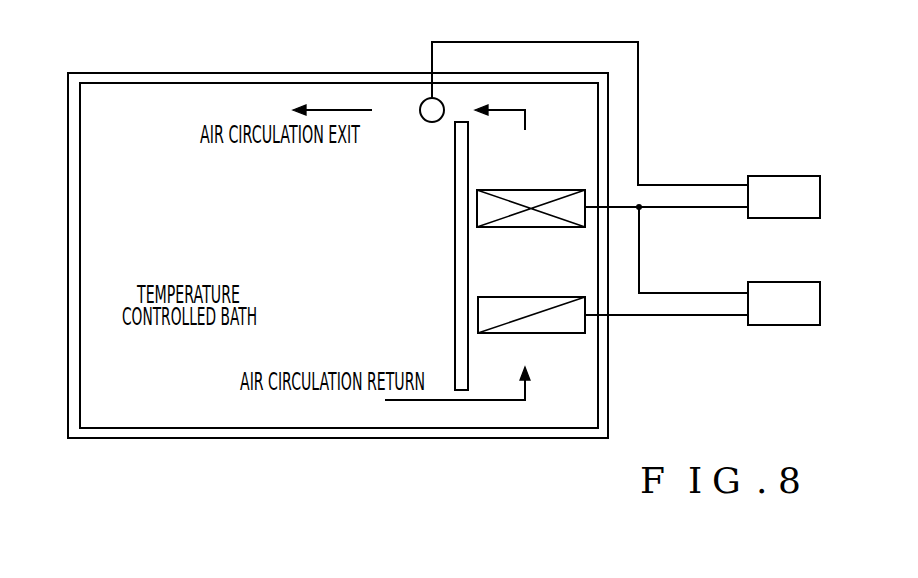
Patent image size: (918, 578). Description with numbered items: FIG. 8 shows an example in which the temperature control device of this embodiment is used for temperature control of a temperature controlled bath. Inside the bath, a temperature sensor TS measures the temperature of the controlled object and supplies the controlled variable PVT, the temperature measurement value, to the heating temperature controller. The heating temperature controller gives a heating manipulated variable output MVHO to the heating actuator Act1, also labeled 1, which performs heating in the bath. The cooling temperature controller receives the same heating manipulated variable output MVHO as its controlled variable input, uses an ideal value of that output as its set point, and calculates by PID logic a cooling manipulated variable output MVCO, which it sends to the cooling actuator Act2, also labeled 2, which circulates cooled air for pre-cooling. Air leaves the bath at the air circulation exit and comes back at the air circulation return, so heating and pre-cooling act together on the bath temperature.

The actuator Act1 (heater) 1 is at (531, 192).
The actuator Act2 (cooler) 2 is at (531, 299).
The heating actuator Act1 is at (531, 192).
The cooling actuator Act2 is at (531, 299).
The controlled variable PVT is at (590, 115).
The manipulated variable output MVHO is at (666, 248).
The manipulated variable output MVCO is at (666, 329).
The temperature sensor TS is at (425, 123).